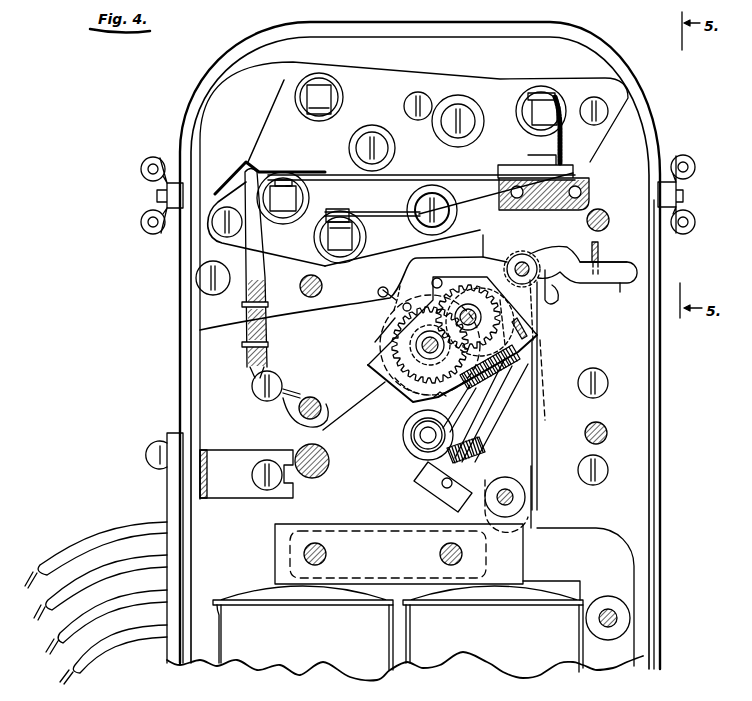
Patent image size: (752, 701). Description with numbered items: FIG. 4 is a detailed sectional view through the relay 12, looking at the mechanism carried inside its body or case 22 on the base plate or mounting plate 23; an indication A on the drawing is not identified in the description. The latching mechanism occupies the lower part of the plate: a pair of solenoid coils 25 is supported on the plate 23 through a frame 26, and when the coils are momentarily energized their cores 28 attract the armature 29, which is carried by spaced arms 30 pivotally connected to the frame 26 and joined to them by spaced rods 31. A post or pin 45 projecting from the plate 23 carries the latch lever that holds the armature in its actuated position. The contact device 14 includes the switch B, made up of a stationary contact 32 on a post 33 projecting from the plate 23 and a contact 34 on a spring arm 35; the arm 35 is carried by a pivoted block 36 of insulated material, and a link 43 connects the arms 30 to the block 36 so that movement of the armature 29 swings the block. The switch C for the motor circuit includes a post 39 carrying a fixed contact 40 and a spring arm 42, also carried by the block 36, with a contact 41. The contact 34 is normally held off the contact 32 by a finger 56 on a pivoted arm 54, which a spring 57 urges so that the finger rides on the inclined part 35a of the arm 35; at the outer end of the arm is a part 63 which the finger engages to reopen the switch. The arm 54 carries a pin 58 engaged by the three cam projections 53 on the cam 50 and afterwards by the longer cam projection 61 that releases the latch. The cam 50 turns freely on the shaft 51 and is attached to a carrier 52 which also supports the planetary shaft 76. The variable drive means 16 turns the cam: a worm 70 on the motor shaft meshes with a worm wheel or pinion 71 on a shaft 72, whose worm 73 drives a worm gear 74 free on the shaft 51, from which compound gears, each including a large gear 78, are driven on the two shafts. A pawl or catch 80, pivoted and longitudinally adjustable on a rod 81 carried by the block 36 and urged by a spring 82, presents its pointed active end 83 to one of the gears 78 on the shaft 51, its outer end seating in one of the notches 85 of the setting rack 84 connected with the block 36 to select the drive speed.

The relay 12 is at (190, 114).
The body or case 22 is at (183, 397).
The section line A is at (184, 323).
The stationary contact 32 is at (304, 173).
The pivoted block 36 is at (588, 182).
The spring arm 35 is at (398, 174).
The inclined part 35a is at (258, 157).
The part at outer end of arm 63 is at (247, 160).
The finger 56 is at (248, 178).
The post 33 is at (292, 201).
The contact 34 is at (284, 178).
The switch B is at (290, 178).
The contact 41 is at (342, 212).
The spring arm 42 is at (416, 213).
The fixed contact 40 is at (332, 236).
The post 39 is at (358, 236).
The switch C is at (320, 258).
The cam projection 61 is at (404, 268).
The pin 58 is at (382, 294).
The pointed active end 83 is at (395, 310).
The arm 54 is at (273, 274).
The spring 57 is at (290, 402).
The post or pin 45 is at (340, 428).
The base plate or mounting plate 23 is at (264, 449).
The armature 29 is at (399, 554).
The spaced rods 31 is at (324, 553).
The spaced arms 30 is at (551, 533).
The cores 28 is at (338, 598).
The solenoid coils 25 is at (400, 638).
The frame 26 is at (618, 650).
The variable drive means 16 is at (546, 296).
The link 43 is at (538, 366).
The contact device 14 is at (385, 385).
The large gear 78 is at (420, 393).
The cam 50 is at (405, 347).
The shaft 51 is at (385, 338).
The cam projections 53 is at (385, 372).
The planetary shaft 76 is at (468, 306).
The cam carrier 52 is at (522, 333).
The pawl 80 is at (492, 240).
The post or rod 81 is at (522, 260).
The spring 82 is at (552, 255).
The setting or locking rack 84 is at (599, 250).
The notches 85 is at (604, 264).
The worm 73 is at (512, 380).
The worm gear 74 is at (497, 398).
The shaft 72 is at (463, 408).
The worm wheel or pinion 71 is at (495, 413).
The worm 70 is at (420, 447).